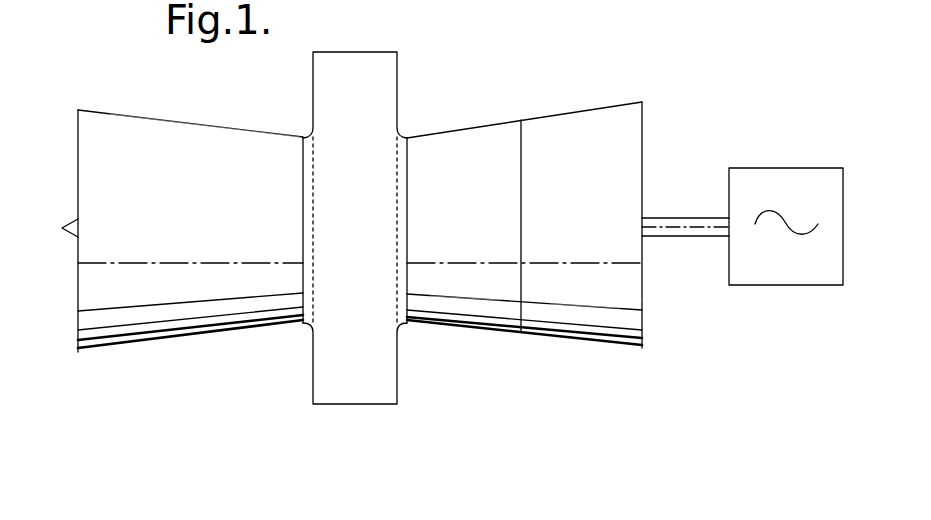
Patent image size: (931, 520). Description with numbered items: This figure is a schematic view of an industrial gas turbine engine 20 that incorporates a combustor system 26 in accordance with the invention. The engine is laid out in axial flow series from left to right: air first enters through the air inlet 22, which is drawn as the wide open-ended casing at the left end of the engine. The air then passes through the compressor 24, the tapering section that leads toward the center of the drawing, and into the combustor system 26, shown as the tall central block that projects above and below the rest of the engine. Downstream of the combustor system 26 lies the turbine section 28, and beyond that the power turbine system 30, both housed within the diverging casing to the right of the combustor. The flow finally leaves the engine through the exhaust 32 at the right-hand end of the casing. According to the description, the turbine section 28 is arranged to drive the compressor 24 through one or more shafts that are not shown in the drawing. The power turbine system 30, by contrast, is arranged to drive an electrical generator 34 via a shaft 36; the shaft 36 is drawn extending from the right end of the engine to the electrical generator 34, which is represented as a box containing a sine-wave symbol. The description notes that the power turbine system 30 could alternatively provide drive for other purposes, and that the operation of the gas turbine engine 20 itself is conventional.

The industrial gas turbine engine 20 is at (573, 114).
The air inlet 22 is at (90, 175).
The compressor 24 is at (200, 138).
The combustor system 26 is at (353, 387).
The turbine section 28 is at (462, 307).
The power turbine system 30 is at (582, 318).
The exhaust 32 is at (642, 298).
The electrical generator 34 is at (792, 174).
The shaft 36 is at (681, 216).